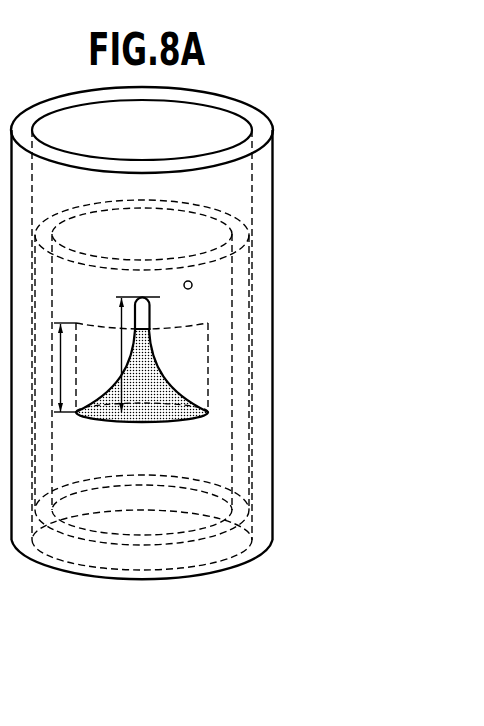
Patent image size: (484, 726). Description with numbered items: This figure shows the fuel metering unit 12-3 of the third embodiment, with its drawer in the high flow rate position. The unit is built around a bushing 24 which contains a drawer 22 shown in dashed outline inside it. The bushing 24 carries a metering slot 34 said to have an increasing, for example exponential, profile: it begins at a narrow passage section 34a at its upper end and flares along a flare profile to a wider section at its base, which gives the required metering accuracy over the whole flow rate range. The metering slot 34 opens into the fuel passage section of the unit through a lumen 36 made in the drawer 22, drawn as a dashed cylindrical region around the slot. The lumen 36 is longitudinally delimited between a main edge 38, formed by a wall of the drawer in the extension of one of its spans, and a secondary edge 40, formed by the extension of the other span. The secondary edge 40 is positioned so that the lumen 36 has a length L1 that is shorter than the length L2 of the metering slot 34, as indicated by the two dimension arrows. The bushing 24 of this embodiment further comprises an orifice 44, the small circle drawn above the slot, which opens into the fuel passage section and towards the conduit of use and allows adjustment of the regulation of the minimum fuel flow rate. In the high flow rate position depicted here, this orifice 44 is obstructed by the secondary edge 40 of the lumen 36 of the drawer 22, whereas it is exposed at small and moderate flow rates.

The fuel metering unit 12-3 is at (280, 247).
The bushing 24 is at (241, 111).
The drawer 22 is at (156, 209).
The orifice 44 is at (192, 284).
The secondary edge 40 is at (97, 332).
The lumen 36 is at (209, 367).
The main edge 38 is at (97, 406).
The metering slot 34 is at (188, 412).
The narrow passage section 34a is at (160, 298).
The length of the lumen L1 is at (57, 367).
The length of the metering slot L2 is at (128, 354).